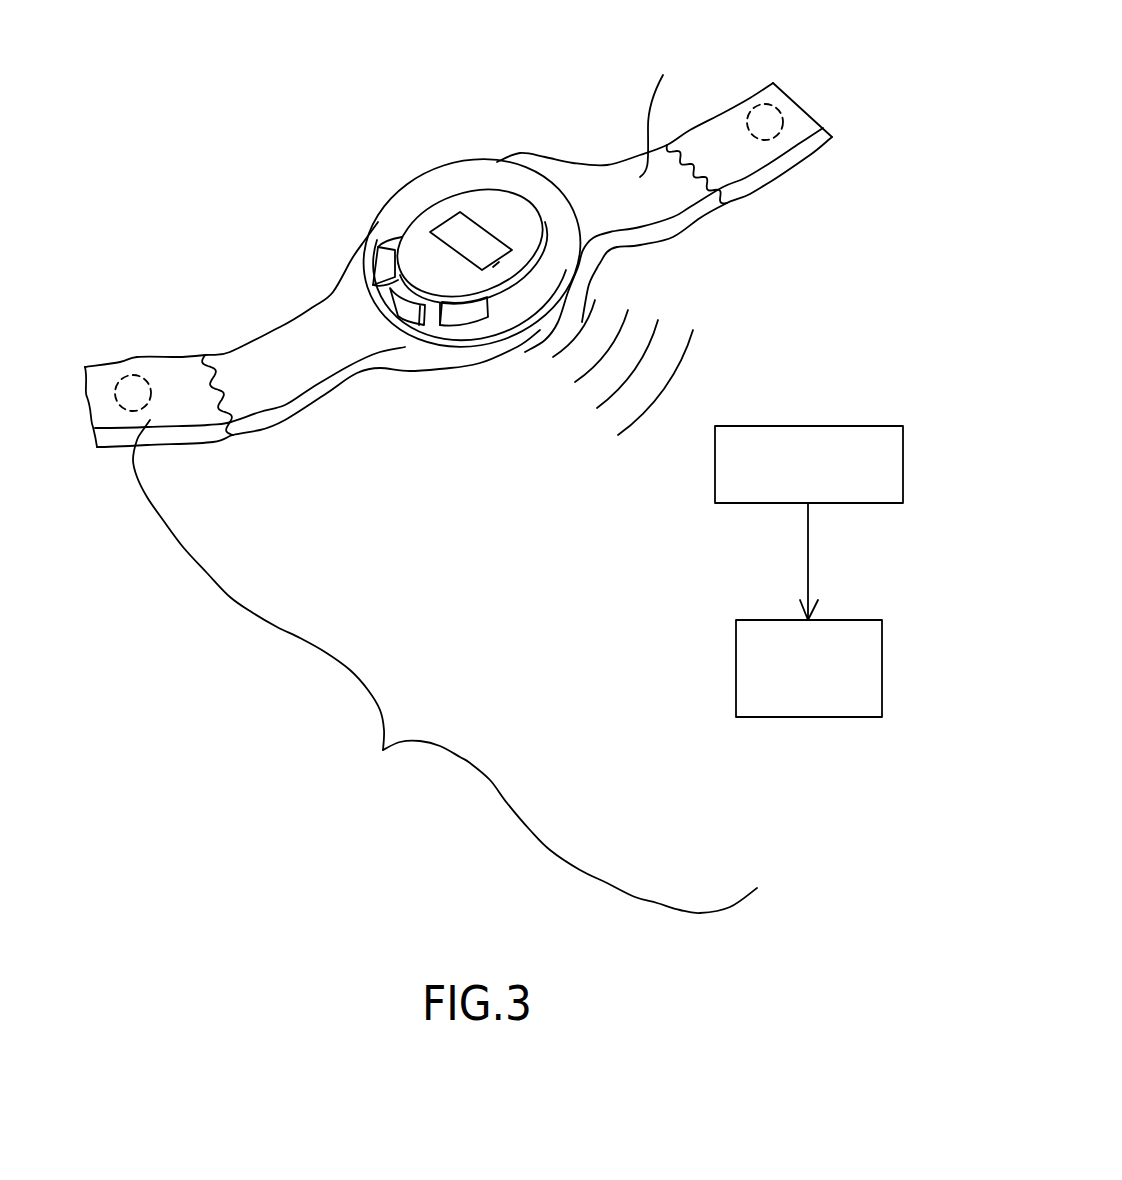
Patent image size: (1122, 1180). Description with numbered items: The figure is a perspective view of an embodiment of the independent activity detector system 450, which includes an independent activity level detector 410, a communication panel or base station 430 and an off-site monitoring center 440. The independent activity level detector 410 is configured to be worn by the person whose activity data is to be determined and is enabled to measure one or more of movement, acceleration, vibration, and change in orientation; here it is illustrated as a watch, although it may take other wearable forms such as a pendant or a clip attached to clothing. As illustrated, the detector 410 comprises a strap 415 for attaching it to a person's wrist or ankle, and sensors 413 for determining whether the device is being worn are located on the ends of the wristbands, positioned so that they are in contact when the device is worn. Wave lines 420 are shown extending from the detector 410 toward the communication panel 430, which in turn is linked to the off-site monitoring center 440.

The independent activity level detector 410 is at (352, 288).
The sensors 413 is at (130, 395).
The strap 415 is at (664, 112).
The wireless signal 420 is at (662, 320).
The communication panel or base station 430 is at (837, 423).
The off-site monitoring center 440 is at (837, 620).
The independent activity detector system 450 is at (445, 666).